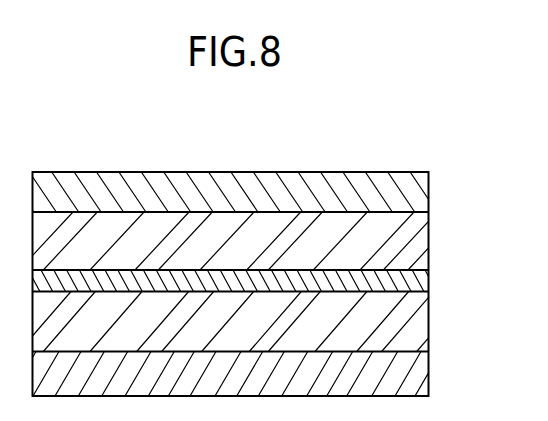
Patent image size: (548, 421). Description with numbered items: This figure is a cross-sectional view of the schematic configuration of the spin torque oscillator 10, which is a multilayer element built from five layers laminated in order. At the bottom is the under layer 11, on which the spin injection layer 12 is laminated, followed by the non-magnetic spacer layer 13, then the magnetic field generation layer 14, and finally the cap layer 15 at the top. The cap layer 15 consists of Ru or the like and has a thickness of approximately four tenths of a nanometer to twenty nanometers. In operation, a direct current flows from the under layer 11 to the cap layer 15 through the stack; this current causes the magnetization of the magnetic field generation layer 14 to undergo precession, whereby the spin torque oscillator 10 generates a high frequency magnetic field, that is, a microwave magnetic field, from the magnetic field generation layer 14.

The spin torque oscillator 10 is at (410, 153).
The under layer 11 is at (420, 373).
The spin injection layer 12 is at (420, 322).
The non-magnetic spacer layer 13 is at (420, 282).
The magnetic field generation layer 14 is at (420, 236).
The cap layer 15 is at (420, 191).